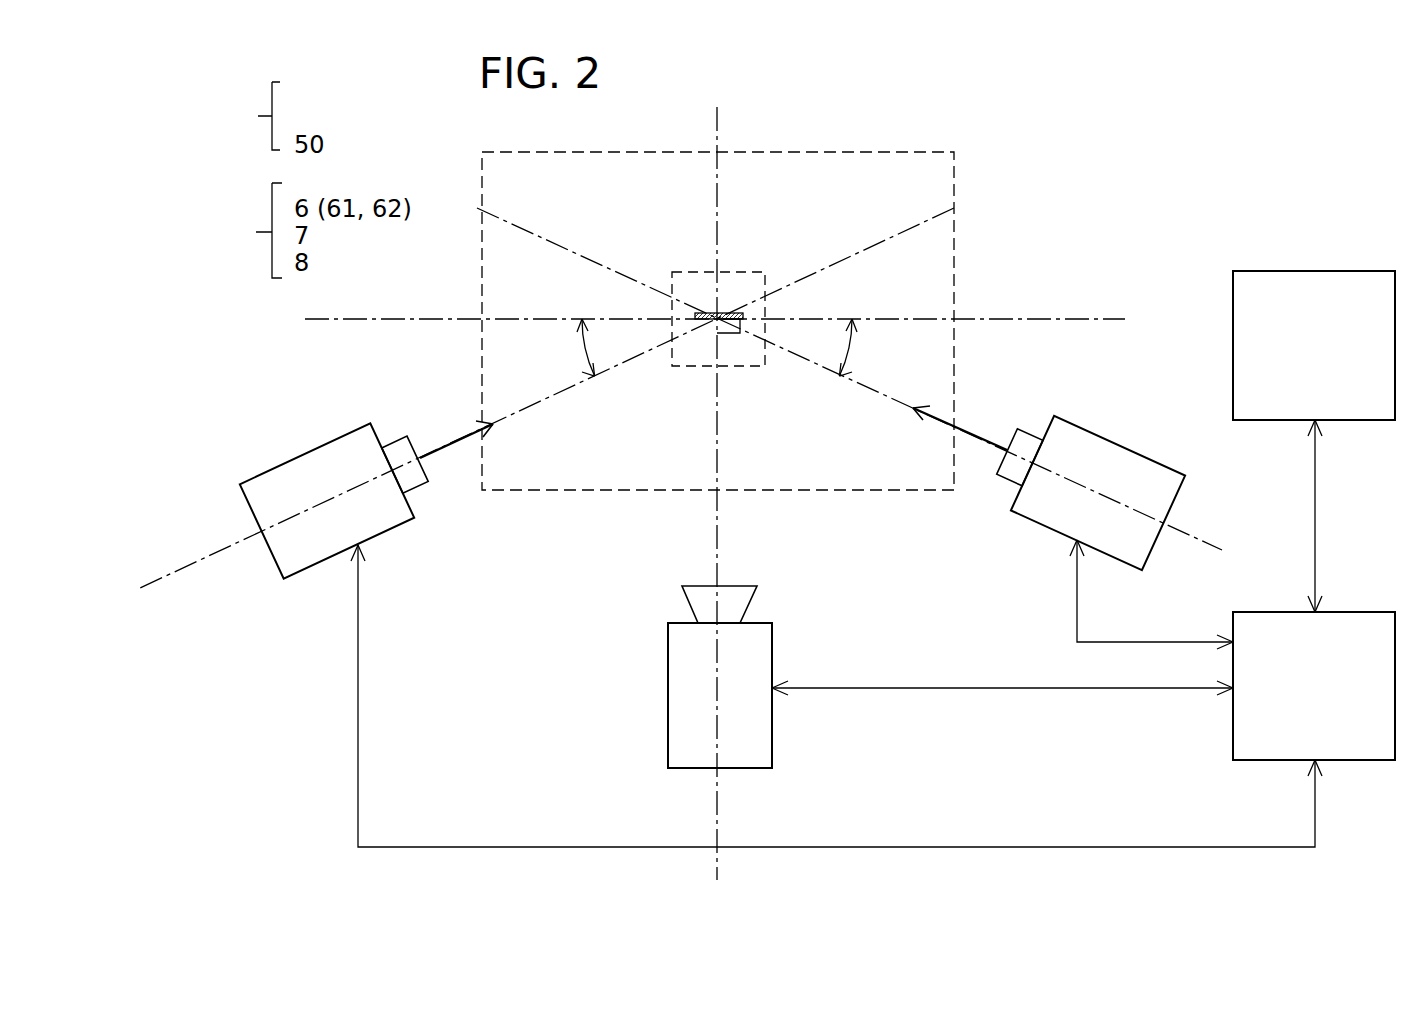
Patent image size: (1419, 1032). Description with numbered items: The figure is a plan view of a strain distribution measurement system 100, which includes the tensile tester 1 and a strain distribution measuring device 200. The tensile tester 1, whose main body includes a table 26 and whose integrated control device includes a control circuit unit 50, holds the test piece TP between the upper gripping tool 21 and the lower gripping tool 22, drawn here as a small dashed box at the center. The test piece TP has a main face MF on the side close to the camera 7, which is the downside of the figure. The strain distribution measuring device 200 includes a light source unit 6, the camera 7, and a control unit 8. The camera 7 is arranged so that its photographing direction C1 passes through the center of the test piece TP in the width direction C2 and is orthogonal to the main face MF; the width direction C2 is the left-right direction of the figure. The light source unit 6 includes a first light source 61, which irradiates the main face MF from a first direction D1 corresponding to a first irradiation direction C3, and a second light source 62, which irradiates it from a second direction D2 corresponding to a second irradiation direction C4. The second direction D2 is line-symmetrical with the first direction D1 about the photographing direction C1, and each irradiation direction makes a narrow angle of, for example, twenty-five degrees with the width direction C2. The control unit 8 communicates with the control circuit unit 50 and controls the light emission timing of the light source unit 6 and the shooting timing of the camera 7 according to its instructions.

The tensile tester 1 is at (252, 116).
The table 26 is at (309, 89).
The control circuit unit 50 is at (1315, 270).
The strain distribution measuring device 200 is at (243, 230).
The light source unit 6 is at (731, 527).
The first light source 61 is at (277, 573).
The second light source 62 is at (1152, 548).
The camera 7 is at (755, 768).
The control unit 8 is at (1355, 760).
The upper gripping tool 21 is at (748, 290).
The lower gripping tool 22 is at (750, 268).
The strain distribution measurement system 100 is at (1297, 897).
The test piece TP is at (730, 313).
The main face MF is at (705, 333).
The photographing direction C1 is at (723, 131).
The width direction C2 is at (1030, 318).
The first irradiation direction C3 is at (903, 228).
The second irradiation direction C4 is at (525, 225).
The first direction D1 is at (447, 446).
The second direction D2 is at (980, 434).